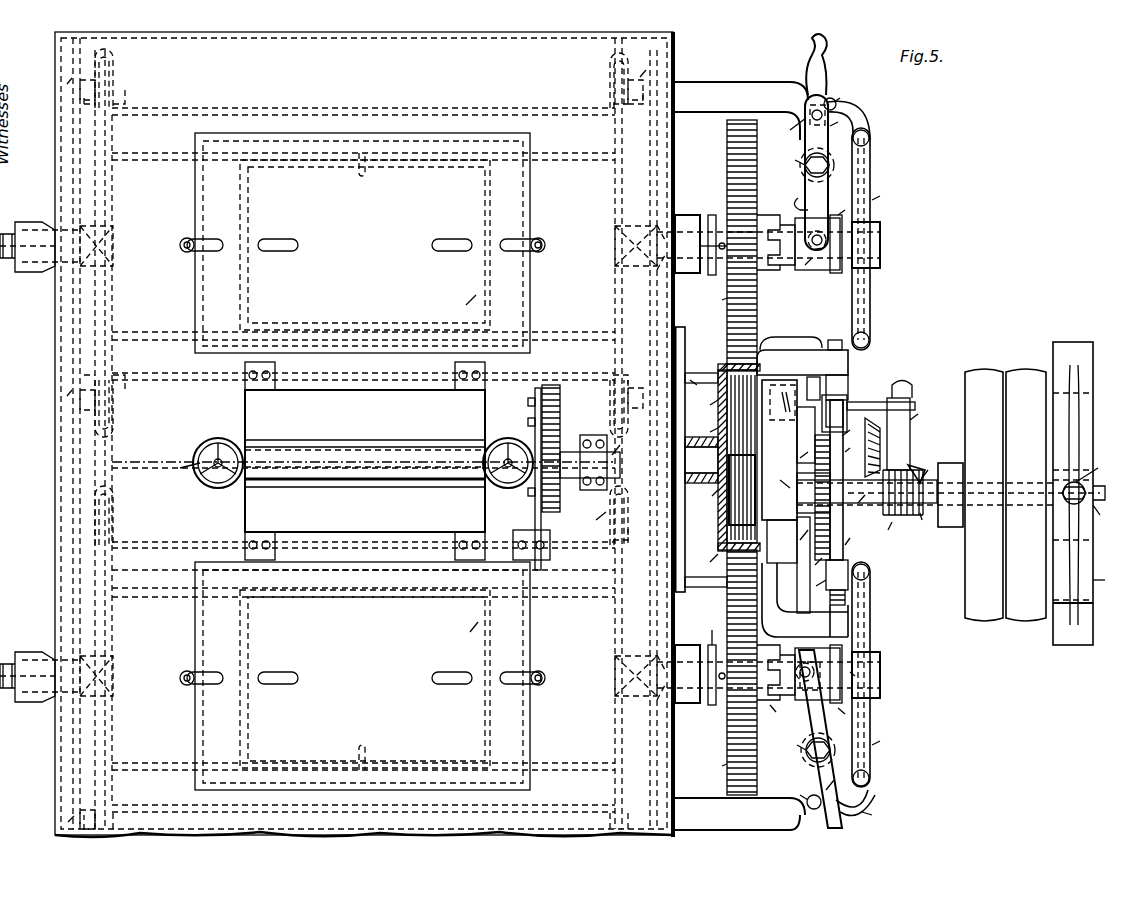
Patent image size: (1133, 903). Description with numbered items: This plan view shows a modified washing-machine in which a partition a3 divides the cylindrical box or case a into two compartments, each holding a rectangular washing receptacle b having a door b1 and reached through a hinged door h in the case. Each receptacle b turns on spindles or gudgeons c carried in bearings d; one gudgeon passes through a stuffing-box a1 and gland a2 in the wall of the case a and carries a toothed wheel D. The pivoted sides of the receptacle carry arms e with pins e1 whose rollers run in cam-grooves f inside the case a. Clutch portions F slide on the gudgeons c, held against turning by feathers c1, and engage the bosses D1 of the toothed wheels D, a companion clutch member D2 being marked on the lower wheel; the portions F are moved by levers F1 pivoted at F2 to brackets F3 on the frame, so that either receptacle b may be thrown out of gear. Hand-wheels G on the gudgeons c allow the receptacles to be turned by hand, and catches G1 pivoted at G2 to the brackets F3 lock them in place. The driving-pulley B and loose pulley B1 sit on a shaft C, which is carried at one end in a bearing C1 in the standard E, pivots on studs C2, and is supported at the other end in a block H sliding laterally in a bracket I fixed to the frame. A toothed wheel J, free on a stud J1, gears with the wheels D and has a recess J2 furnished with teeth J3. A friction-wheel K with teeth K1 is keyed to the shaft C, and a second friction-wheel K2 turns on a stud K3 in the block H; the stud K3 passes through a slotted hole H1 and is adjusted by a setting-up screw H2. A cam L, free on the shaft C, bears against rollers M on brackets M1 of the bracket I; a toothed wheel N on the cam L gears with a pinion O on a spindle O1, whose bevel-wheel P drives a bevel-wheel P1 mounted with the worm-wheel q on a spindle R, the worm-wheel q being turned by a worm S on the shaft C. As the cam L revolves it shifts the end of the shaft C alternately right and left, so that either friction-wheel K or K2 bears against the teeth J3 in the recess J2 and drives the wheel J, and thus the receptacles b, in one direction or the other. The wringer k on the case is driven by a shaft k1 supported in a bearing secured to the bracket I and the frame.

The cylindrical box or case a is at (364, 434).
The stuffing-box a1 is at (675, 462).
The gland a2 is at (768, 460).
The partition a3 is at (347, 463).
The washing receptacle b is at (363, 461).
The receptacle door b1 is at (362, 461).
The spindles or gudgeons c is at (820, 460).
The feathers c1 is at (839, 460).
The shaft C is at (948, 495).
The bearing C1 is at (1105, 518).
The studs C2 is at (1089, 478).
The bearings d is at (40, 452).
The toothed wheels D is at (731, 457).
The bosses of toothed wheels D1 is at (776, 457).
The clutch member D2 is at (769, 714).
The arms e is at (353, 432).
The pins or projections e1 is at (354, 444).
The cam-grooves f is at (371, 460).
The clutch portions F is at (814, 431).
The levers F1 is at (804, 449).
The lever pivot F2 is at (808, 457).
The brackets F3 is at (740, 456).
The hand-wheels G is at (872, 457).
The catches G1 is at (861, 463).
The catch pivot G2 is at (819, 444).
The hinged door h is at (362, 461).
The block H is at (796, 471).
The slotted hole H1 is at (817, 389).
The setting-up screw H2 is at (802, 356).
The bracket I is at (805, 564).
The toothed wheel J is at (695, 459).
The stud J1 is at (701, 455).
The recess J2 is at (701, 508).
The teeth or projections J3 is at (706, 569).
The wringer k is at (365, 461).
The wringer driving-shaft k1 is at (567, 477).
The friction-wheel K is at (729, 457).
The teeth or projections K1 is at (706, 430).
The second friction-wheel K2 is at (706, 404).
The stud K3 is at (781, 409).
The cam L is at (844, 480).
The rollers M is at (832, 472).
The roller brackets M1 is at (805, 496).
The toothed wheel N is at (815, 505).
The pinion O is at (840, 424).
The spindle O1 is at (798, 435).
The bevel-wheel P is at (888, 429).
The bevel-wheel P1 is at (922, 469).
The worm-wheel q is at (920, 523).
The spindle R is at (888, 422).
The worm S is at (900, 507).
The driving-pulley B is at (1026, 495).
The loose pulley B1 is at (984, 495).
The standard E is at (1085, 493).